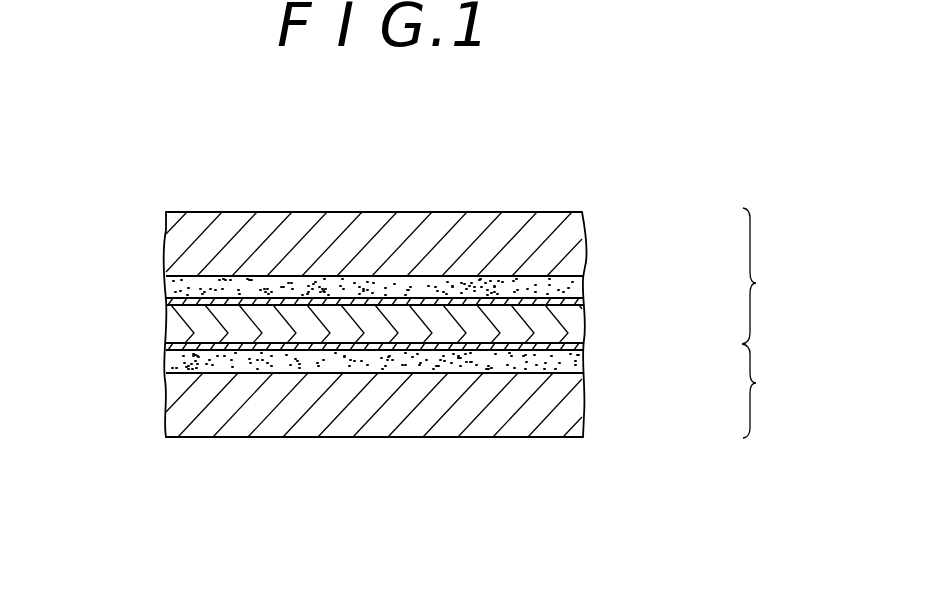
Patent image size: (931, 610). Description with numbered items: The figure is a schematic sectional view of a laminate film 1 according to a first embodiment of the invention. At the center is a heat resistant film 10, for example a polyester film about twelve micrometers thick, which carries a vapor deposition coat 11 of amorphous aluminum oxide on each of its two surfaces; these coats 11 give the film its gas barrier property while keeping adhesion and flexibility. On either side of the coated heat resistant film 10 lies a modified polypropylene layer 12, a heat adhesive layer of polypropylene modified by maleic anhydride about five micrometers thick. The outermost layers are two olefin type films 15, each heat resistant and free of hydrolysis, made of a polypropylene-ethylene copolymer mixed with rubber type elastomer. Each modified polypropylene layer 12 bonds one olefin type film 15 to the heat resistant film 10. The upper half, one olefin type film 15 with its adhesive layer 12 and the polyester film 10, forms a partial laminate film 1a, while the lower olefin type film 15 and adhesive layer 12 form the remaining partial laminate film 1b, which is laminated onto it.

The laminate film 1 is at (532, 191).
The partial laminate film 1a is at (774, 276).
The remaining partial laminate film 1b is at (774, 391).
The heat resistant film 10 is at (566, 329).
The vapor deposition coat 11 is at (166, 347).
The modified polypropylene layer 12 is at (584, 285).
The olefin type film 15 is at (170, 250).